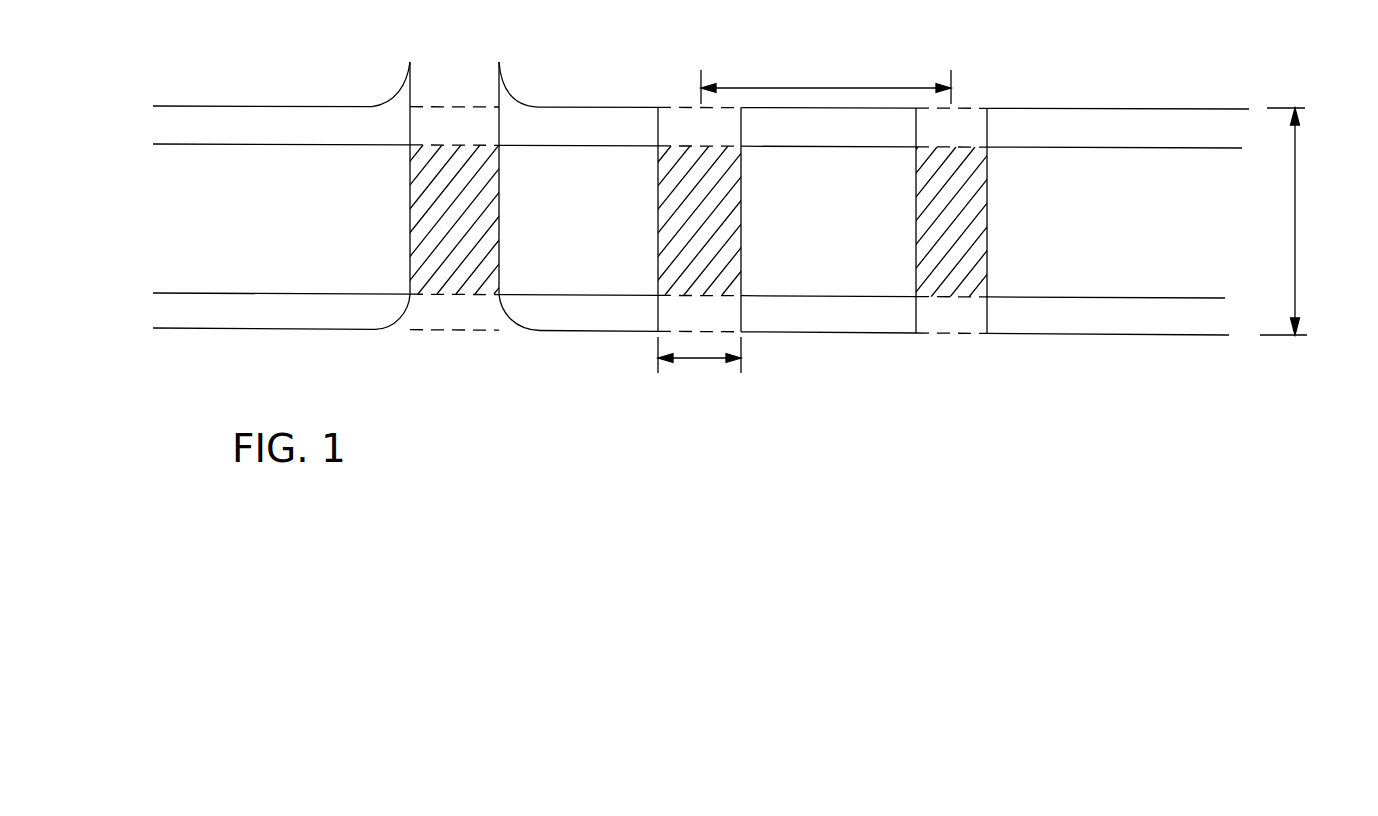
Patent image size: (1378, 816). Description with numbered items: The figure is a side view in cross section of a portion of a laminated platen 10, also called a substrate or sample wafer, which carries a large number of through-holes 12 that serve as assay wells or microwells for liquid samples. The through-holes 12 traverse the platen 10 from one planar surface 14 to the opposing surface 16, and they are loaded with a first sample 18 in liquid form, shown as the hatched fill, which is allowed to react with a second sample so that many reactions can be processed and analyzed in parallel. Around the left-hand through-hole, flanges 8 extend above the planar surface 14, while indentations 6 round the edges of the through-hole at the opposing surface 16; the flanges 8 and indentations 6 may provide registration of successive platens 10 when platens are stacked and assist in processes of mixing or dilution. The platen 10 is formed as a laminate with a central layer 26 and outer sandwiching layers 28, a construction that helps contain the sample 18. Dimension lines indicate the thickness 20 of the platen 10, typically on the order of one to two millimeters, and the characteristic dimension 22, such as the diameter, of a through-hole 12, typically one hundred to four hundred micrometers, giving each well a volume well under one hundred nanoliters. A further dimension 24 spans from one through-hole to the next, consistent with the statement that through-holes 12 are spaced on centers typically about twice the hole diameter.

The platen 10 is at (106, 97).
The outer sandwiching layers 28 is at (286, 140).
The central layer 26 is at (286, 230).
The first sample 18 is at (468, 229).
The through-holes 12 is at (453, 82).
The flanges 8 is at (508, 83).
The indentations 6 is at (508, 313).
The surface 14 is at (1078, 108).
The opposing surface 16 is at (1083, 335).
The thickness 20 is at (1296, 228).
The characteristic dimension 22 is at (697, 360).
The via pitch 24 is at (827, 85).